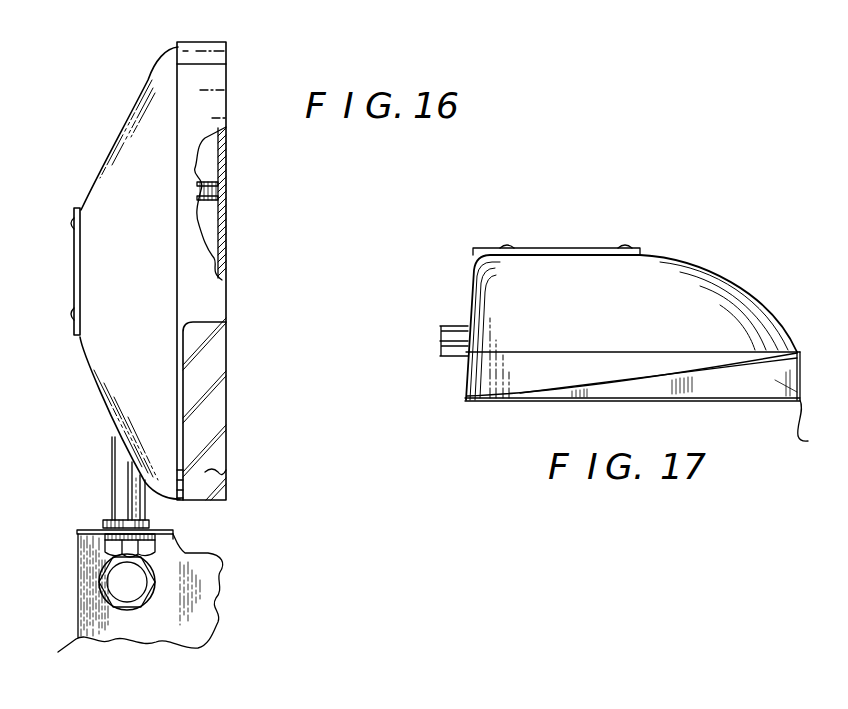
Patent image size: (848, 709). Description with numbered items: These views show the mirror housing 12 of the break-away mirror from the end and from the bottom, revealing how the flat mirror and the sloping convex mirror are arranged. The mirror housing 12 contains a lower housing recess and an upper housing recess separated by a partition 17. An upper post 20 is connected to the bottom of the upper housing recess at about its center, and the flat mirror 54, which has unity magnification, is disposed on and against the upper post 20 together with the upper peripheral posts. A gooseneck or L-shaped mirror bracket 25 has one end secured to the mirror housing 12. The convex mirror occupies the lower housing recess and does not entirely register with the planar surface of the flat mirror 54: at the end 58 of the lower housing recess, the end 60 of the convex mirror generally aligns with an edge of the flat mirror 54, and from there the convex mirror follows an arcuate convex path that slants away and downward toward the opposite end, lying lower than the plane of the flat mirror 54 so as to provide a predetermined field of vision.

In FIG. 16, the mirror housing 12 is at (240, 97).
In FIG. 17, the mirror housing 12 is at (722, 262).
In FIG. 17, the partition 17 is at (813, 425).
In FIG. 16, the upper post 20 is at (218, 187).
In FIG. 16, the mirror bracket 25 is at (122, 483).
In FIG. 17, the mirror bracket 25 is at (462, 340).
In FIG. 16, the flat mirror 54 is at (222, 240).
In FIG. 16, the end of the lower housing recess 58 is at (227, 390).
In FIG. 16, the end of the convex mirror 60 is at (224, 495).